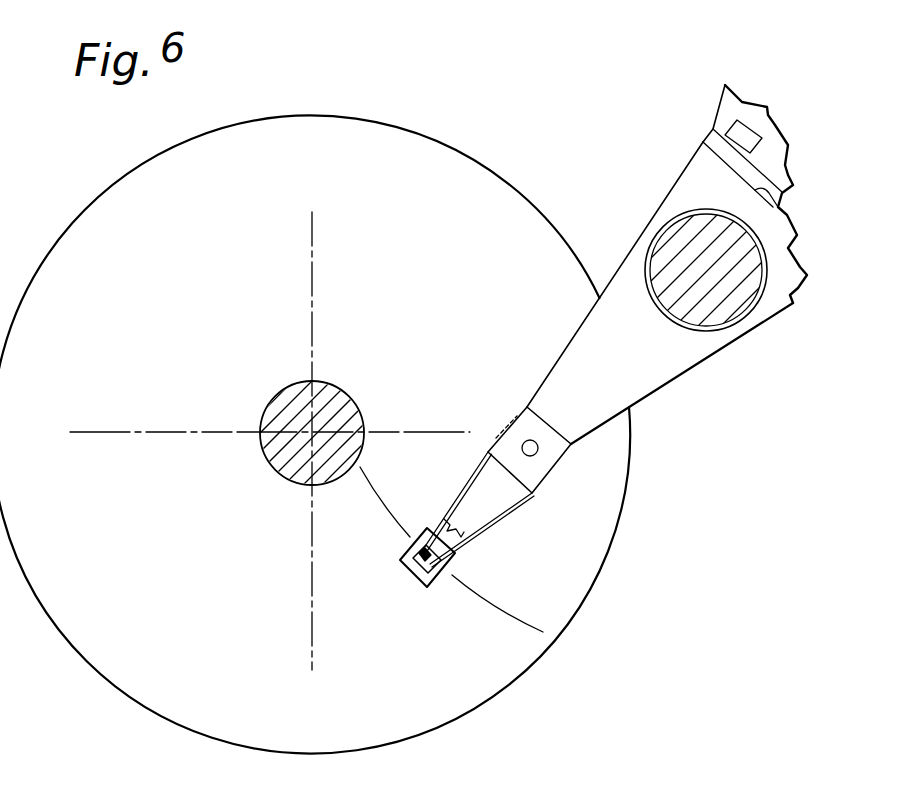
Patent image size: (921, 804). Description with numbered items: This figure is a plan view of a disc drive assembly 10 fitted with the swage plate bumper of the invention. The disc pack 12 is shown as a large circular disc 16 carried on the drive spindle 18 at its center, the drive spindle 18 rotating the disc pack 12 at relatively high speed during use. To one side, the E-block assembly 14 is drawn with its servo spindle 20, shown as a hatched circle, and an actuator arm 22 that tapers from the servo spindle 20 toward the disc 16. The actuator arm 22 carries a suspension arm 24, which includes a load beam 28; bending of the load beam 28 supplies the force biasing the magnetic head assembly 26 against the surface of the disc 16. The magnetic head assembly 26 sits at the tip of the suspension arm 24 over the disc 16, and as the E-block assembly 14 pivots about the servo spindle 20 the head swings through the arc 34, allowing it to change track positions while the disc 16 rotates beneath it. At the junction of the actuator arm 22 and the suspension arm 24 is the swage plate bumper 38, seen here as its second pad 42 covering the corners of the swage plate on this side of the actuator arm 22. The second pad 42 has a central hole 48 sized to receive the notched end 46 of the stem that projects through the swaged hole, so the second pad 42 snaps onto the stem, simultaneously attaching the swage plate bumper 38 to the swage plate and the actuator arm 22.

The disc drive assembly 10 is at (530, 136).
The disc pack 12 is at (100, 181).
The E-block assembly 14 is at (670, 132).
The disc 16 is at (373, 140).
The drive spindle 18 is at (328, 392).
The servo spindle 20 is at (717, 315).
The actuator arm 22 is at (632, 267).
The suspension arm 24 is at (443, 504).
The magnetic head assembly 26 is at (413, 572).
The load beam 28 is at (483, 506).
The arc 34 is at (515, 622).
The swage plate bumper 38 is at (493, 421).
The second pad 42 is at (526, 398).
The notched end 46 is at (541, 455).
The central hole 48 is at (512, 422).